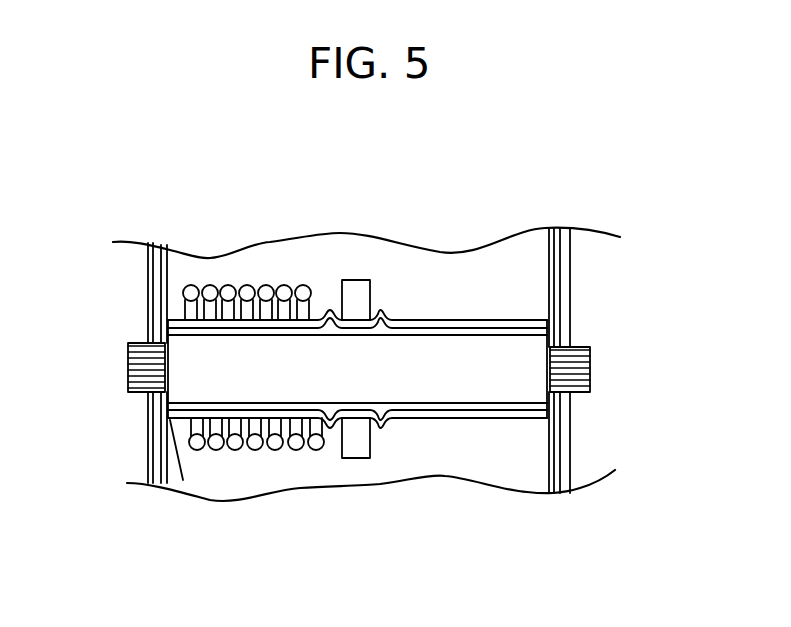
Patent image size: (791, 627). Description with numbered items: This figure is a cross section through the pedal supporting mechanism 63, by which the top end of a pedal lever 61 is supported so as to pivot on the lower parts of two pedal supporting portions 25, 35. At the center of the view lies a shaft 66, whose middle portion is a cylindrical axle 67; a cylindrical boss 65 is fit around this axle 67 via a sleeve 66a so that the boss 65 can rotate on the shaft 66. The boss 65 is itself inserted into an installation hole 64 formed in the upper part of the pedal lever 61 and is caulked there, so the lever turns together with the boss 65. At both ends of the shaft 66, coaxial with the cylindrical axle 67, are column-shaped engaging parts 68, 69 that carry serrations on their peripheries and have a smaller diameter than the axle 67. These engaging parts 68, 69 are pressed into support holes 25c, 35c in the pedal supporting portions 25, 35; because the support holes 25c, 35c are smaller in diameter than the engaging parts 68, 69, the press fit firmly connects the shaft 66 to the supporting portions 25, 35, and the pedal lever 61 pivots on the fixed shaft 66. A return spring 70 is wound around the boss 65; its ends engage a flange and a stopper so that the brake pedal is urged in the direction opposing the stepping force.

The pedal supporting mechanism 63 is at (465, 222).
The sleeve 66a is at (179, 320).
The return spring 70 is at (275, 288).
The support hole 35c is at (553, 337).
The support hole 25c is at (162, 342).
The shaft 66 is at (597, 348).
The engaging part 68 is at (128, 370).
The engaging part 69 is at (590, 365).
The pedal supporting portion 25 is at (163, 443).
The pedal supporting portion 35 is at (560, 437).
The installation hole 64 is at (340, 432).
The pedal lever 61 is at (355, 457).
The cylindrical boss 65 is at (422, 420).
The cylindrical axle 67 is at (447, 387).